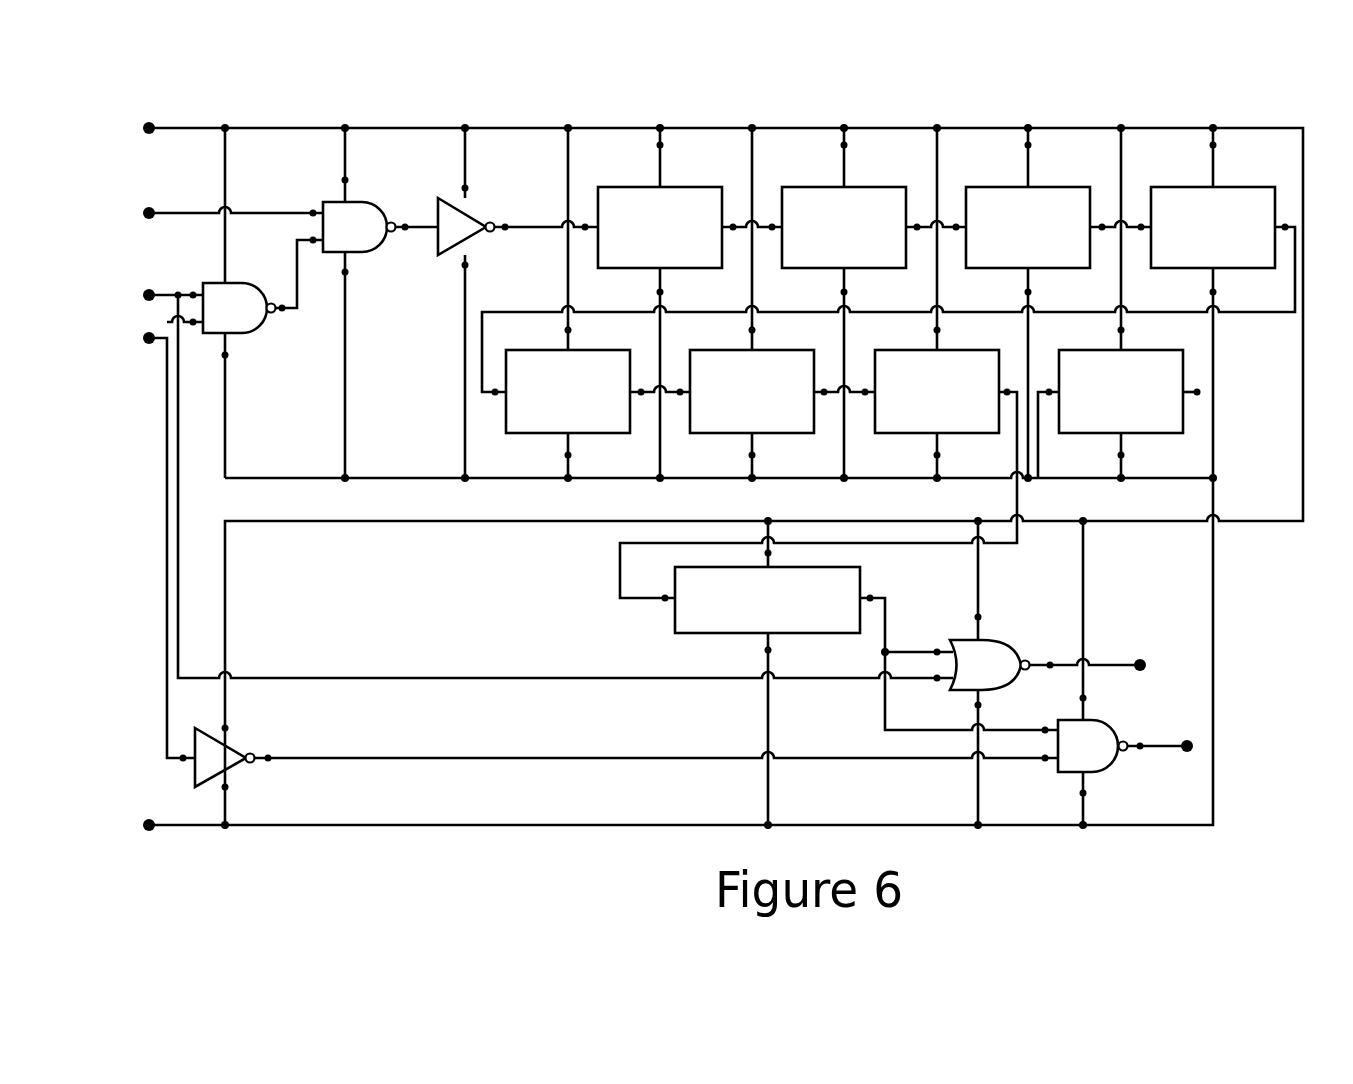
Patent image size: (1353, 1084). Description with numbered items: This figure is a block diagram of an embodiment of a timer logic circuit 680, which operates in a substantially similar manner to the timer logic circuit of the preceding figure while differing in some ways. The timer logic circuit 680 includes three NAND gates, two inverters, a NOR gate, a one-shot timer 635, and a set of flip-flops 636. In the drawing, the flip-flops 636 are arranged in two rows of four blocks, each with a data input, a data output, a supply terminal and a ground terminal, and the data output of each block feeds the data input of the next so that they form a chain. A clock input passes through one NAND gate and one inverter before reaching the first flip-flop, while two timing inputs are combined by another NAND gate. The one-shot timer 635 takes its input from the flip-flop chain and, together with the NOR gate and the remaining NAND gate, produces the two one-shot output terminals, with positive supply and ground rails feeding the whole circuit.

The timer logic circuit 680 is at (808, 104).
The flip-flops 636 is at (890, 310).
The one-shot timer 635 is at (767, 600).